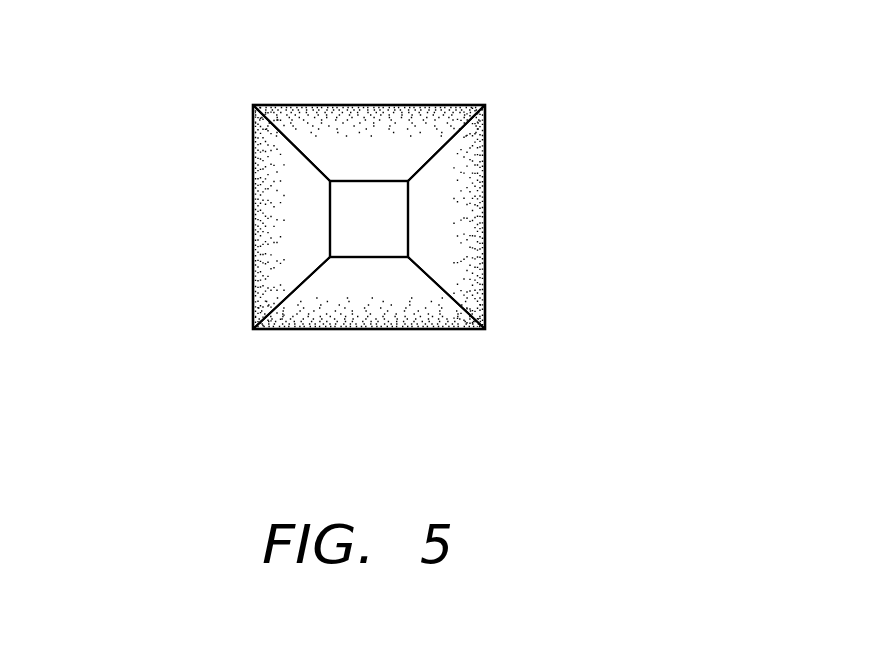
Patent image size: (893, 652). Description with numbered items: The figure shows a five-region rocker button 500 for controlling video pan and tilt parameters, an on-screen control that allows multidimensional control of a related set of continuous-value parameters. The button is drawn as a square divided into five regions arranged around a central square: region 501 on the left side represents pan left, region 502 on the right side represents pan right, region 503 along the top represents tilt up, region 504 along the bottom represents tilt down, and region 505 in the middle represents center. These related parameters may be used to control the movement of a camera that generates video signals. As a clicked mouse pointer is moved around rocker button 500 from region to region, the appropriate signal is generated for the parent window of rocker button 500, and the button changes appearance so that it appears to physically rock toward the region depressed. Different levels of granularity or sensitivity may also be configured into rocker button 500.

The five-region rocker button 500 is at (686, 73).
The pan left region 501 is at (283, 231).
The pan right region 502 is at (445, 220).
The tilt up region 503 is at (365, 130).
The tilt down region 504 is at (355, 300).
The center region 505 is at (383, 218).